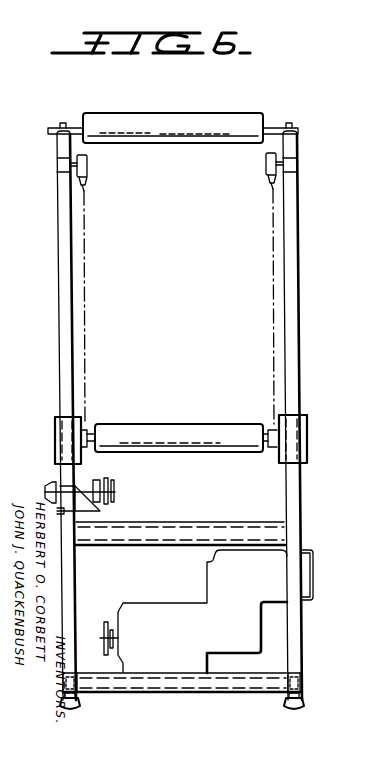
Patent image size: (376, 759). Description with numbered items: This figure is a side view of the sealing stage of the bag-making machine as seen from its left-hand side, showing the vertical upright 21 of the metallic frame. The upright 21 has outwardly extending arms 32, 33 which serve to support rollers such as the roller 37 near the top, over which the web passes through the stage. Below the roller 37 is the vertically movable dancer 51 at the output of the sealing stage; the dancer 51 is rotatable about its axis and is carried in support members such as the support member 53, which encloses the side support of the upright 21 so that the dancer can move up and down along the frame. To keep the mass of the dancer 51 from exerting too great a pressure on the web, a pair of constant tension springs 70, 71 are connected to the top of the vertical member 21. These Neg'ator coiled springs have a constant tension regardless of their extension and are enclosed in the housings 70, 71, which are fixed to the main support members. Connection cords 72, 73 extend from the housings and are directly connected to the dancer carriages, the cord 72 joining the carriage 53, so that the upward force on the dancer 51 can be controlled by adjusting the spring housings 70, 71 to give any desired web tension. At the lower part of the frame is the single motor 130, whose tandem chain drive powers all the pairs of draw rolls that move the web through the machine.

The upright 21 is at (58, 320).
The outwardly extending arm 33 is at (57, 148).
The roller 37 is at (210, 121).
The constant tension spring housing 70 is at (89, 164).
The constant tension spring housing 71 is at (266, 165).
The connection cord 72 is at (86, 289).
The connection cord 73 is at (272, 272).
The dancer 51 is at (196, 433).
The support member 53 is at (56, 440).
The outwardly extending arm 32 is at (309, 430).
The motor 130 is at (170, 594).